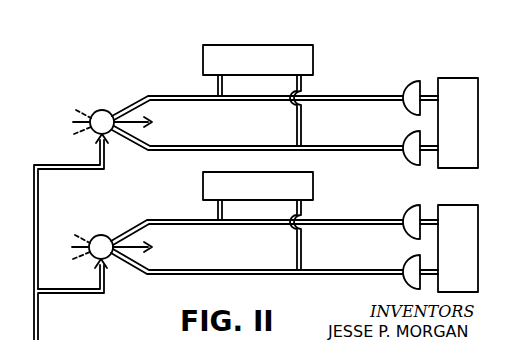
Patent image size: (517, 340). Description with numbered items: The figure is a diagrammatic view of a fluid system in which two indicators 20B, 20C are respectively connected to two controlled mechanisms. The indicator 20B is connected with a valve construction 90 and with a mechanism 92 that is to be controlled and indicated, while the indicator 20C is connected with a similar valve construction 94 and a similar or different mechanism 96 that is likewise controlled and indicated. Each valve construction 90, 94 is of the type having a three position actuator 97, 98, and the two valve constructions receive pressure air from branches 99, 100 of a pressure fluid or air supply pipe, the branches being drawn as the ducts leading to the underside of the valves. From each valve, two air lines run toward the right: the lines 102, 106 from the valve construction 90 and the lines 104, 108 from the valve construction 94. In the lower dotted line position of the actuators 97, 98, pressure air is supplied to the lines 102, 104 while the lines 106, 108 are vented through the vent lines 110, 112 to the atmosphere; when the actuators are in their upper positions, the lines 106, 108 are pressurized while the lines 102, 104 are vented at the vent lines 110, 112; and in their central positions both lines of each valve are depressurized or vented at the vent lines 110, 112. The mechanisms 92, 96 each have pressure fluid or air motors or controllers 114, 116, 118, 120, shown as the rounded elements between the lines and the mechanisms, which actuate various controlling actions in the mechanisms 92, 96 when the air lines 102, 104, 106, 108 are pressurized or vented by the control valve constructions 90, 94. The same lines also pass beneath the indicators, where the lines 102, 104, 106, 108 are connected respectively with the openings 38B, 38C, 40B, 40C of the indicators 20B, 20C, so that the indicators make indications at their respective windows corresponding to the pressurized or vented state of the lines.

The indicator 20B is at (302, 54).
The indicator 20C is at (314, 181).
The opening 38B is at (218, 72).
The opening 38C is at (218, 200).
The opening 40B is at (302, 76).
The opening 40C is at (314, 199).
The valve construction 90 is at (104, 108).
The mechanism 92 is at (465, 80).
The valve construction 94 is at (96, 235).
The mechanism 96 is at (465, 208).
The three position actuator 97 is at (79, 110).
The three position actuator 98 is at (80, 238).
The branch 99 is at (85, 172).
The branch 100 is at (70, 295).
The line 102 is at (186, 101).
The line 104 is at (186, 224).
The line 106 is at (184, 150).
The line 108 is at (180, 275).
The vent line 110 is at (138, 126).
The vent line 112 is at (140, 252).
The air motor or controller 114 is at (408, 86).
The air motor or controller 116 is at (404, 140).
The air motor or controller 118 is at (408, 208).
The air motor or controller 120 is at (405, 265).